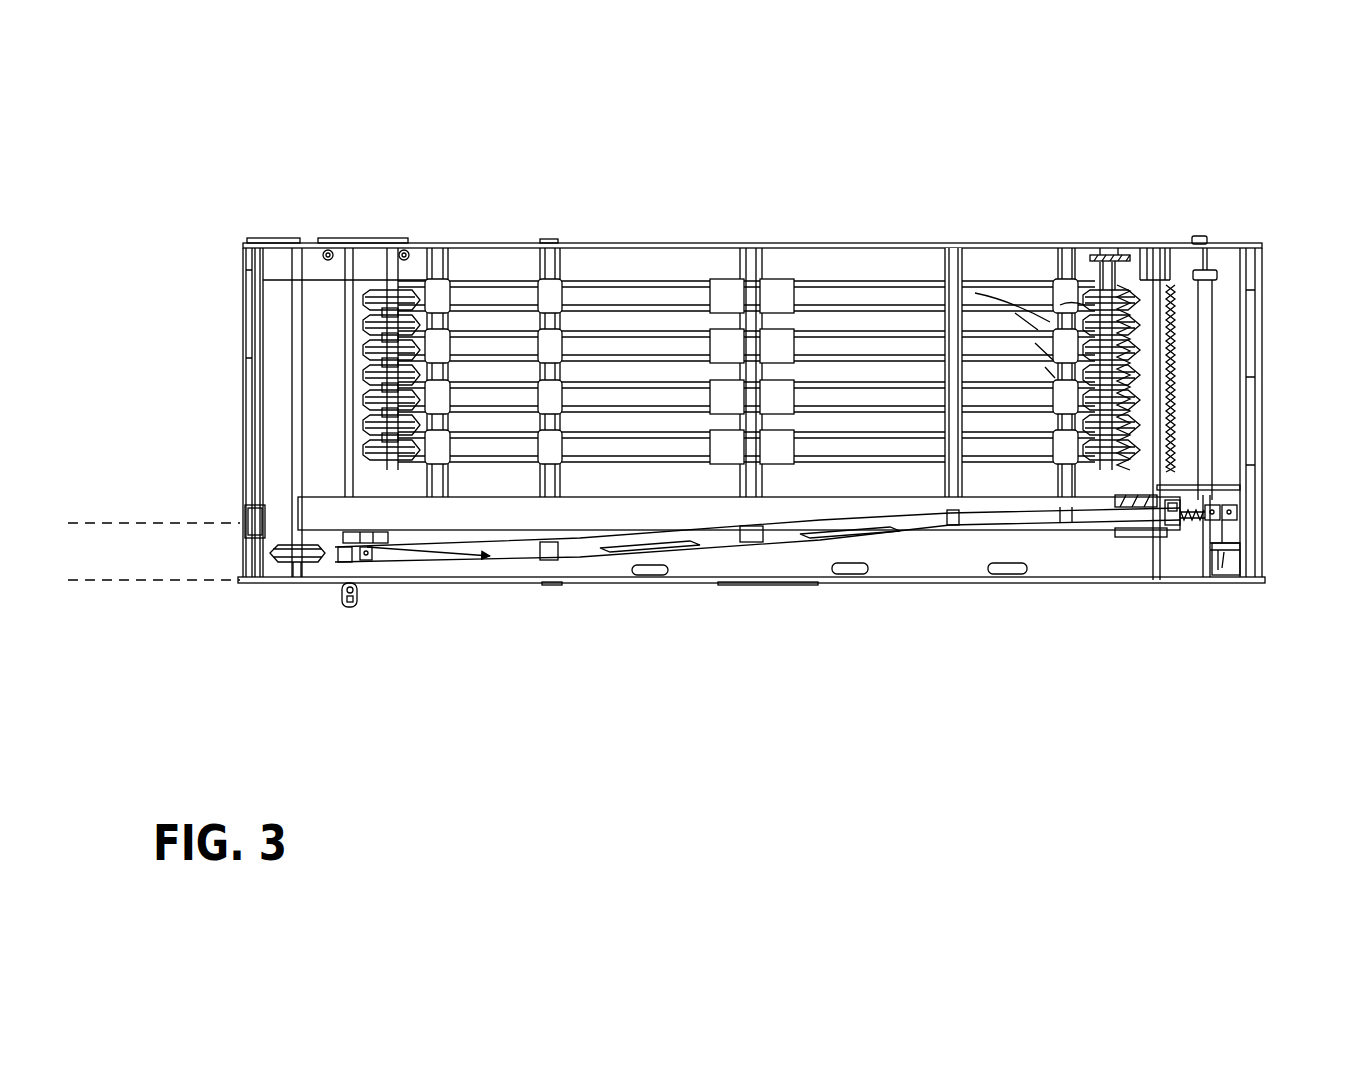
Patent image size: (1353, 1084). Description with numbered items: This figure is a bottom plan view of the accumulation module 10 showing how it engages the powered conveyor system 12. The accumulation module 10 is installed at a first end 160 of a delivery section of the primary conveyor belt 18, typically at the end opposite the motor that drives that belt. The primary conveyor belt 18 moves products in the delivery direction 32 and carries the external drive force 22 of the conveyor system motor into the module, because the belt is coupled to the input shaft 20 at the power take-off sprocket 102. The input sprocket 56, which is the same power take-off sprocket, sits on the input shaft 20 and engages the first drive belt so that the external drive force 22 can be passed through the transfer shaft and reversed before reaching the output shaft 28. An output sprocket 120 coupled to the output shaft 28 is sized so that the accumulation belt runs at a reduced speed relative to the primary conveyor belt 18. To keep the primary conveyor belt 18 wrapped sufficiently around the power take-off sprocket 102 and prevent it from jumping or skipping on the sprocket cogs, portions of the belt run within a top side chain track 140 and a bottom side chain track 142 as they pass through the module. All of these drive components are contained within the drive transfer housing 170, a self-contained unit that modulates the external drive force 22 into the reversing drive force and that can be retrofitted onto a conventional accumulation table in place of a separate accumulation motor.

The accumulation module 10 is at (752, 634).
The conveyor system 12 is at (155, 600).
The conveyor belt 18 is at (1233, 523).
The input shaft 20 is at (1205, 355).
The external drive force 22 is at (1192, 545).
The output shaft 28 is at (1085, 310).
The delivery direction 32 is at (385, 548).
The input sprocket 56 is at (1212, 270).
The power take-off sprocket 102 is at (1183, 522).
The output sprocket 120 is at (1117, 258).
The top side chain track 140 is at (785, 545).
The bottom side chain track 142 is at (958, 510).
The first end 160 is at (1252, 493).
The drive transfer housing 170 is at (1236, 597).